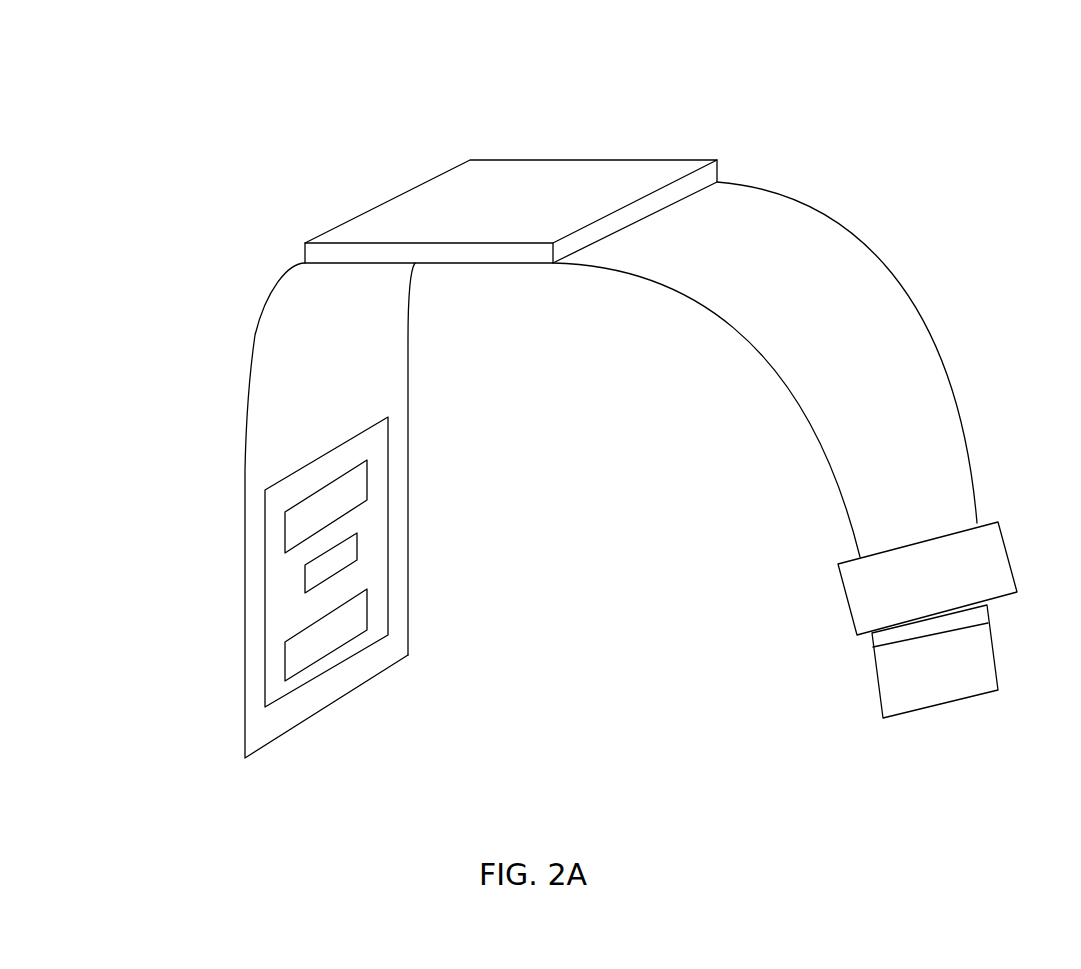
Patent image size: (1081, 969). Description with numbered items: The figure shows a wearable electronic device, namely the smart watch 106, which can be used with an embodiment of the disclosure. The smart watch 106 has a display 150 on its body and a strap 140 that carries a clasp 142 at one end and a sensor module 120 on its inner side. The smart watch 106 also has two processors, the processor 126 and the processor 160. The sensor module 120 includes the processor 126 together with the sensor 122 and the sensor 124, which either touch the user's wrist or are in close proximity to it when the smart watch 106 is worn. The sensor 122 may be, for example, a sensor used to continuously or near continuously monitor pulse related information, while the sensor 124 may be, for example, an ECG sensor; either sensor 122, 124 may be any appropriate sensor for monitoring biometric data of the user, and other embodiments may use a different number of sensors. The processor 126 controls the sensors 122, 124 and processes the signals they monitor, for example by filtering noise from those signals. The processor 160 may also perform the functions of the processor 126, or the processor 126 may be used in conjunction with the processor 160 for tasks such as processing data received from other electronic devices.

The smart watch 106 is at (554, 390).
The display 150 is at (452, 192).
The strap 140 is at (285, 321).
The processor 160 is at (512, 263).
The sensor module 120 is at (338, 558).
The sensor 122 is at (283, 510).
The sensor 124 is at (283, 643).
The processor 126 is at (357, 538).
The clasp 142 is at (852, 618).